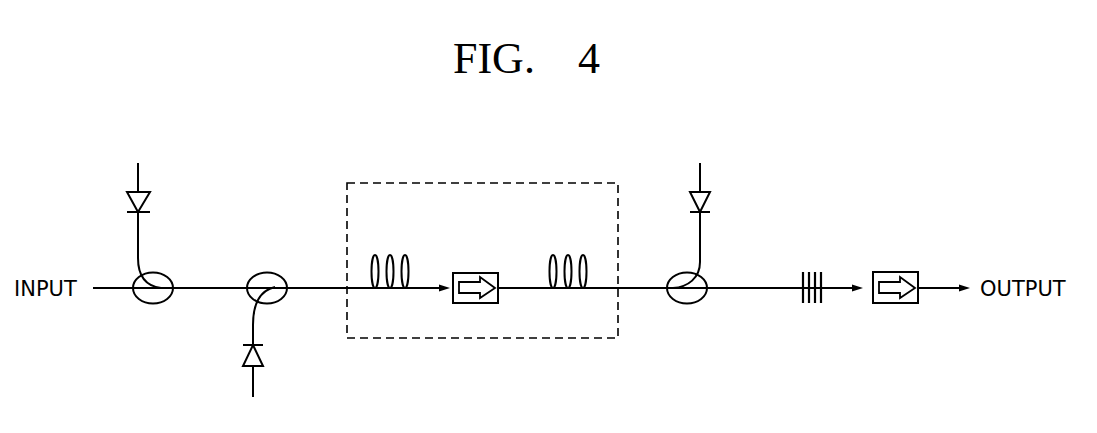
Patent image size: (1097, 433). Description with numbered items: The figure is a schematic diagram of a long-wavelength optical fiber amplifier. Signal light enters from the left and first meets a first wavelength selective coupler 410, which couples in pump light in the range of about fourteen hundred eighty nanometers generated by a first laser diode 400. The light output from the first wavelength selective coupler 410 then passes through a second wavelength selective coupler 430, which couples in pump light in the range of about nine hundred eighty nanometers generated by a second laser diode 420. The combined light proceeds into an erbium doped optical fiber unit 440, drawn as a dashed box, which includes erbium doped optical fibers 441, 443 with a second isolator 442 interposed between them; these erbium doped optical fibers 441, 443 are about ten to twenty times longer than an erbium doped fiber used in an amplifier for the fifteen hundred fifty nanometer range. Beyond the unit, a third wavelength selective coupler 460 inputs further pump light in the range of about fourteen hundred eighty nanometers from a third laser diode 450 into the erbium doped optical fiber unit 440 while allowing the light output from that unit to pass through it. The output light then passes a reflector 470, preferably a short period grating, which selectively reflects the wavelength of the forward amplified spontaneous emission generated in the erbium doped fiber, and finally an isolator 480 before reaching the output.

The first laser diode 400 is at (156, 199).
The first wavelength selective coupler 410 is at (153, 305).
The second laser diode 420 is at (239, 355).
The second wavelength selective coupler 430 is at (267, 272).
The erbium doped optical fiber unit 440 is at (548, 182).
The erbium doped optical fiber 441 is at (411, 250).
The second isolator 442 is at (473, 272).
The erbium doped optical fiber 443 is at (566, 248).
The third laser diode 450 is at (719, 199).
The third wavelength selective coupler 460 is at (685, 305).
The reflector 470 is at (802, 304).
The isolator 480 is at (895, 270).